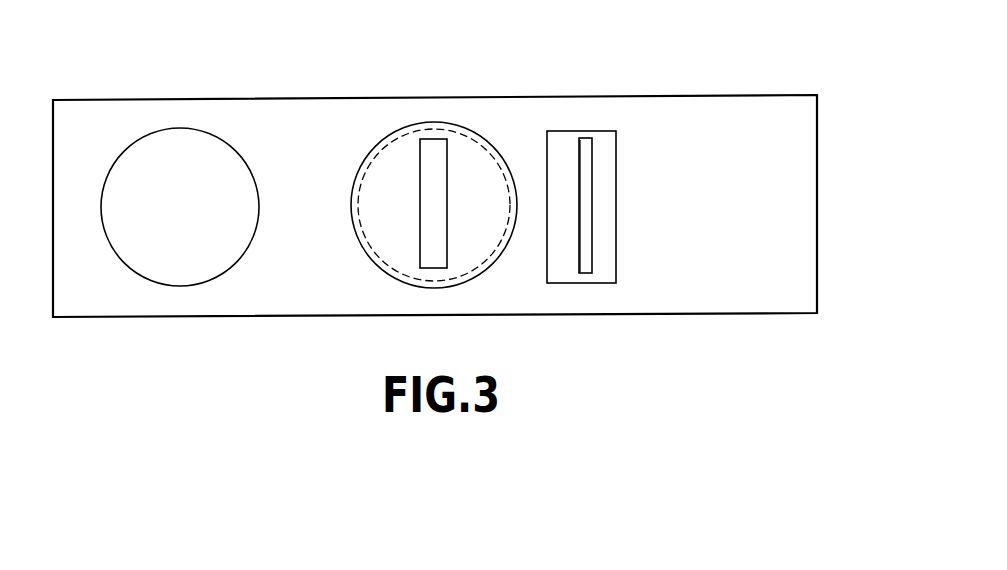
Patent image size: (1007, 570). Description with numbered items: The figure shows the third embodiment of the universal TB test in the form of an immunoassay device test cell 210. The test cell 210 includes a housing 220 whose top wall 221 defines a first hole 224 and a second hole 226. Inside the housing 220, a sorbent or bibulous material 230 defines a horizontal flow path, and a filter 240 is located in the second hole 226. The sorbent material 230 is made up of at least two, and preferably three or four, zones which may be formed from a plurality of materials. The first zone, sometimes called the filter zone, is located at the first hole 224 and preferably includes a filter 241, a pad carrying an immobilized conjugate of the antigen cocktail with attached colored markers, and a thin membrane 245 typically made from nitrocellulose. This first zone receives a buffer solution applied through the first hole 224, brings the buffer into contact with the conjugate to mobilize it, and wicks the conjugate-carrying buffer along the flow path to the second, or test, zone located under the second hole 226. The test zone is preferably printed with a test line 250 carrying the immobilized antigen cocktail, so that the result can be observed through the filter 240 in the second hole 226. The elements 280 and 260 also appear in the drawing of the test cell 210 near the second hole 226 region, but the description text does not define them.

The immunoassay device test cell 210 is at (702, 51).
The housing 220 is at (818, 233).
The top wall 221 is at (758, 190).
The first hole 224 is at (207, 131).
The sorbent material 230 is at (152, 183).
The filter 241 is at (207, 242).
The filter 240 is at (402, 123).
The second hole 226 is at (482, 138).
The test line 250 is at (433, 140).
The thin membrane 245 is at (565, 143).
The rectangular slot 280 is at (603, 142).
The slot wall 260 is at (593, 242).